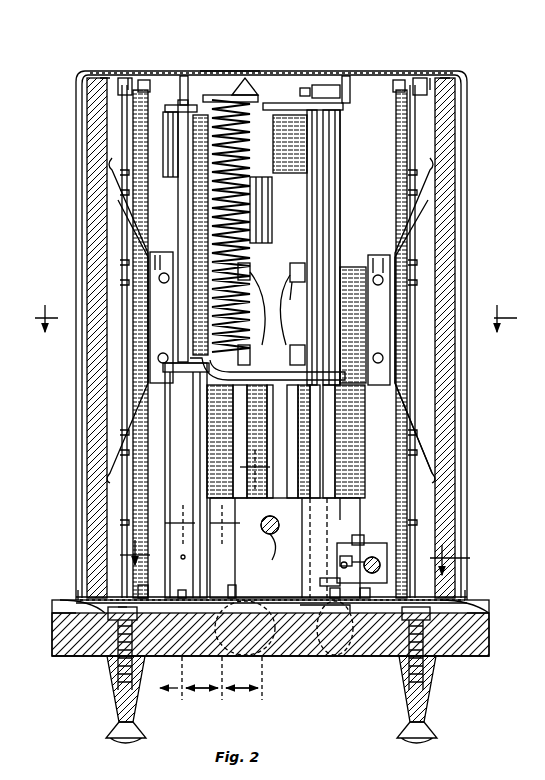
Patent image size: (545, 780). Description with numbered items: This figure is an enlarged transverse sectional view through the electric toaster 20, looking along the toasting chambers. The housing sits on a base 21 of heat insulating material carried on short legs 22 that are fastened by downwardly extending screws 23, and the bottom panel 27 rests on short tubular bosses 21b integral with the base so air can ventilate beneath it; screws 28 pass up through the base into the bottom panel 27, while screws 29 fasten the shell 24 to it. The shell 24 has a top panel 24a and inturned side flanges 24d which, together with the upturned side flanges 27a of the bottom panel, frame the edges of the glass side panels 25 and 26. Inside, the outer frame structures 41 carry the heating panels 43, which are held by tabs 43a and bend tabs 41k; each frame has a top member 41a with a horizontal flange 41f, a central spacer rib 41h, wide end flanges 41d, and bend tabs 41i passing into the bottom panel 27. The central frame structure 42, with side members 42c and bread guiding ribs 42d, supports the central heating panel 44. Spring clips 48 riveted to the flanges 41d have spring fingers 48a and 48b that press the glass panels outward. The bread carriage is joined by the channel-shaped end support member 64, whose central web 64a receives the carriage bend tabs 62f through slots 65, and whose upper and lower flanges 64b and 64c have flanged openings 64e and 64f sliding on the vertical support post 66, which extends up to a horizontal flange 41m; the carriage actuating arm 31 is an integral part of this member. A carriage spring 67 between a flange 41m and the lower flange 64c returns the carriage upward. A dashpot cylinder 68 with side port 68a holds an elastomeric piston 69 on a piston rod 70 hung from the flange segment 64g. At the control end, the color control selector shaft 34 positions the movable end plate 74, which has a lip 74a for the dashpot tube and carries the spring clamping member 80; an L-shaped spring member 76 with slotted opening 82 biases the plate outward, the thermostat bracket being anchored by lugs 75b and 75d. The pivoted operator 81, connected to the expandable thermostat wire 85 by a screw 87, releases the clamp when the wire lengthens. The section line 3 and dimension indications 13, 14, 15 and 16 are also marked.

The section line 3 is at (276, 337).
The dimension 13 is at (244, 573).
The dimension 14 is at (218, 605).
The dimension 15 is at (177, 594).
The dimension 16 is at (304, 560).
The electric toaster 20 is at (75, 730).
The base 21 is at (490, 640).
The tubular supporting boss 21b is at (62, 612).
The leg 22 is at (125, 742).
The screw 23 is at (118, 688).
The outer shell 24 is at (468, 78).
The top panel 24a is at (230, 70).
The inturned side flange 24d is at (80, 97).
The side panel 25 is at (448, 245).
The side panel 26 is at (92, 245).
The bottom panel 27 is at (470, 604).
The side flange 27a is at (78, 595).
The screw 28 is at (150, 656).
The screw 29 is at (176, 598).
The carriage actuating arm 31 is at (274, 190).
The color control selector shaft 34 is at (285, 548).
The outer frame structure 41 is at (146, 100).
The top member 41a is at (145, 80).
The inwardly extending flange 41d is at (160, 93).
The horizontal flange 41f is at (123, 88).
The spacer rib 41h is at (140, 292).
The bend tab 41i is at (325, 610).
The bend tab 41k is at (100, 72).
The horizontal flange 41m is at (185, 100).
The central frame structure 42 is at (244, 401).
The side member 42c is at (240, 440).
The bread guiding rib 42d is at (300, 440).
The heating panel 43 is at (123, 338).
The tab 43a is at (128, 78).
The central heating panel 44 is at (290, 465).
The spring clip 48 is at (164, 255).
The spring finger 48a is at (118, 214).
The spring finger 48b is at (432, 445).
The bend tab 62f is at (275, 325).
The end support member 64 is at (332, 210).
The central web 64a is at (326, 170).
The upper flange 64b is at (284, 113).
The lower flange 64c is at (336, 395).
The flanged opening 64e is at (326, 107).
The flanged opening 64f is at (312, 410).
The flange segment 64g is at (238, 84).
The slot 65 is at (292, 345).
The support post 66 is at (325, 256).
The carriage spring 67 is at (262, 252).
The cylinder 68 is at (250, 428).
The port 68a is at (183, 555).
The piston 69 is at (163, 353).
The piston rod 70 is at (183, 196).
The end plate 74 is at (305, 498).
The lip 74a is at (226, 575).
The lug 75b is at (345, 608).
The lug 75d is at (252, 656).
The spring member 76 is at (340, 498).
The spring clamping member 80 is at (218, 492).
The operator 81 is at (362, 538).
The slotted opening 82 is at (346, 555).
The thermostatic element 85 is at (345, 566).
The screw 87 is at (374, 557).